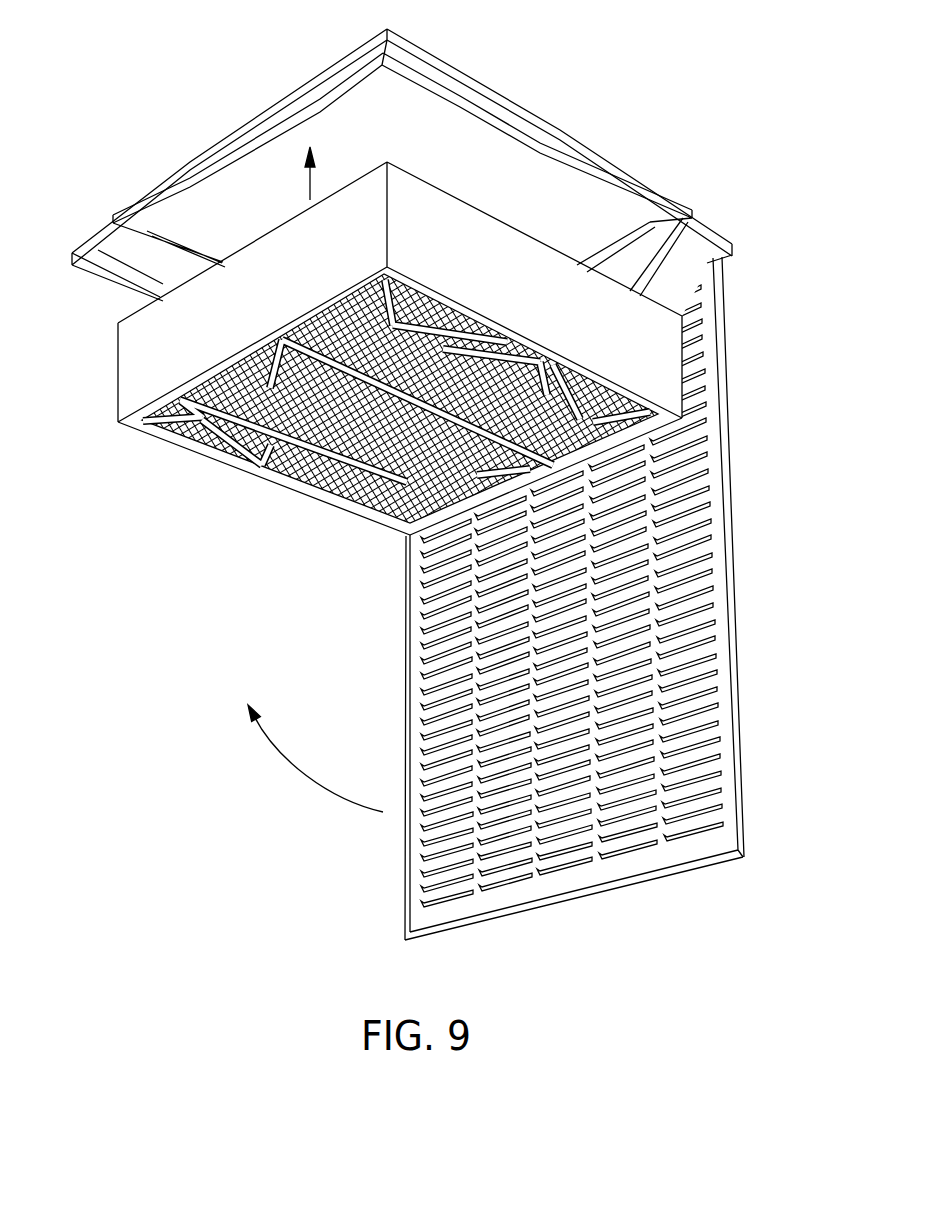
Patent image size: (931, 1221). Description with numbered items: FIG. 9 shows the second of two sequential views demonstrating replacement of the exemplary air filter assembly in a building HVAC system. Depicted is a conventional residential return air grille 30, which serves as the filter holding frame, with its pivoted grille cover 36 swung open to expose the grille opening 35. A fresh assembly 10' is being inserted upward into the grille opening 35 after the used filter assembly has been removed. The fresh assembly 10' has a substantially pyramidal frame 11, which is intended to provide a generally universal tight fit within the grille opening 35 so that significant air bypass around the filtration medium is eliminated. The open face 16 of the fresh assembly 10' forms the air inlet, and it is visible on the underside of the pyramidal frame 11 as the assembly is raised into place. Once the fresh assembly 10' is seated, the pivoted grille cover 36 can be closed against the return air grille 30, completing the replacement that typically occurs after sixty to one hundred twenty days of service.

The fresh assembly 10' is at (237, 479).
The pyramidal frame 11 is at (147, 358).
The open face 16 is at (321, 495).
The return air grille 30 is at (745, 231).
The grille opening 35 is at (533, 152).
The pivoted grille cover 36 is at (724, 545).